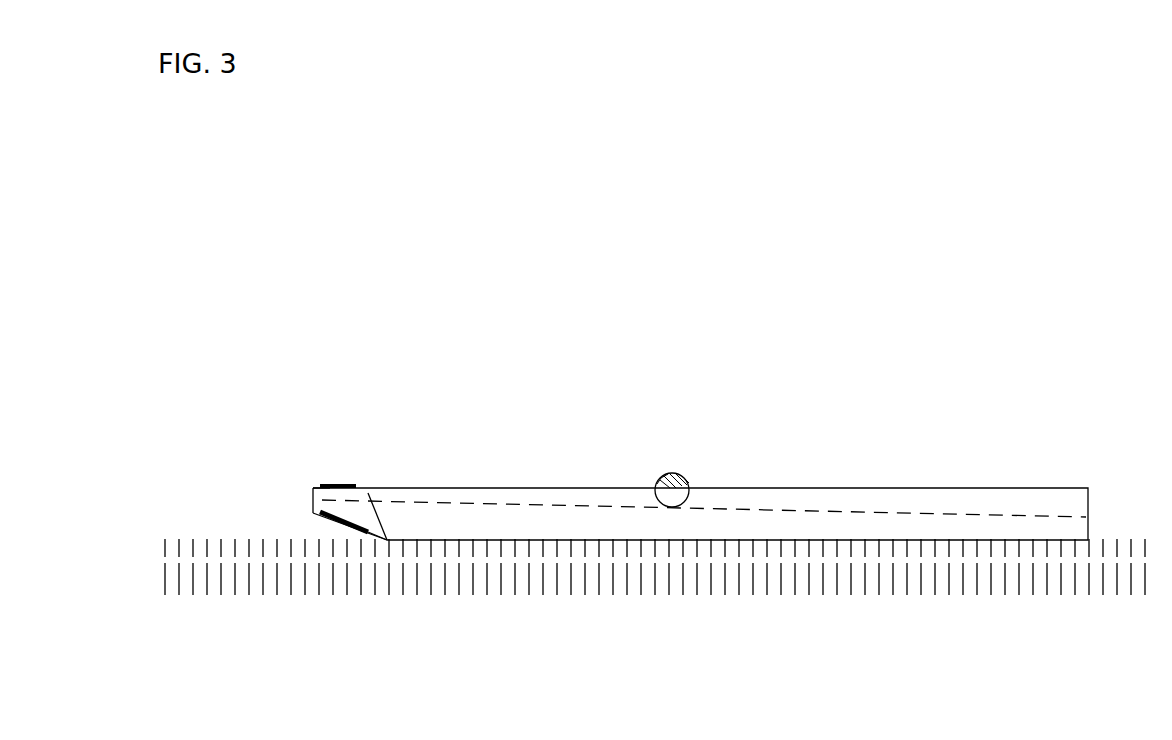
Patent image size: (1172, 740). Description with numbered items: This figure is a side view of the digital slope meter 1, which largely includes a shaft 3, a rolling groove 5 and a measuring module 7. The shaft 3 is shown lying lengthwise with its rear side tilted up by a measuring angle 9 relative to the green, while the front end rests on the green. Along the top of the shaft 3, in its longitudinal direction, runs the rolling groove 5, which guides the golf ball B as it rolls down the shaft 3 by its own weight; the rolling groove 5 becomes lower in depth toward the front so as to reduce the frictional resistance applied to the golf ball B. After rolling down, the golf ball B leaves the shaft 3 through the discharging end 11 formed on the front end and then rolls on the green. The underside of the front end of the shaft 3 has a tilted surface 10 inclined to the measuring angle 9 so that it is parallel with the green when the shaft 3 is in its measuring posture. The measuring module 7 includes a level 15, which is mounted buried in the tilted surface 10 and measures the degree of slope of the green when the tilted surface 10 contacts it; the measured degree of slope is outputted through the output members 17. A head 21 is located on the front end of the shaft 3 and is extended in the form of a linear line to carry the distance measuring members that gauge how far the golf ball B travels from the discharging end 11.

The digital slope meter 1 is at (852, 322).
The shaft 3 is at (903, 478).
The rolling groove 5 is at (727, 507).
The measuring module 7 is at (359, 478).
The lower edge 9 is at (350, 530).
The tilted surface 10 is at (310, 516).
The discharging end 11 is at (313, 490).
The level 15 is at (343, 524).
The output members 17 is at (323, 484).
The head 21 is at (369, 493).
The golf ball B is at (673, 473).